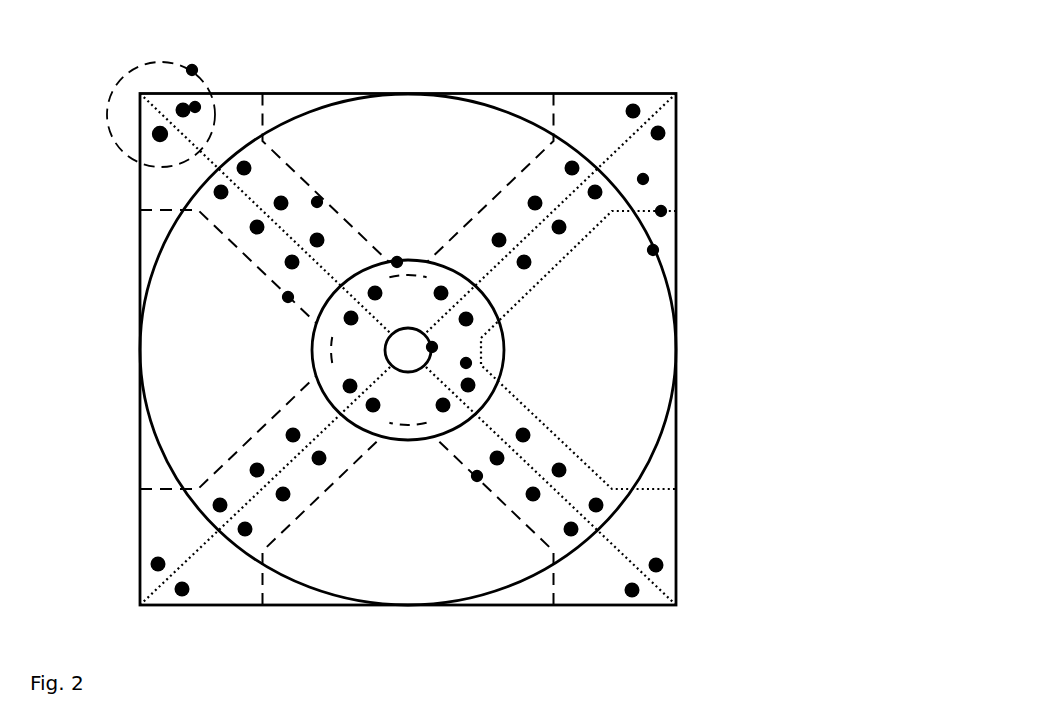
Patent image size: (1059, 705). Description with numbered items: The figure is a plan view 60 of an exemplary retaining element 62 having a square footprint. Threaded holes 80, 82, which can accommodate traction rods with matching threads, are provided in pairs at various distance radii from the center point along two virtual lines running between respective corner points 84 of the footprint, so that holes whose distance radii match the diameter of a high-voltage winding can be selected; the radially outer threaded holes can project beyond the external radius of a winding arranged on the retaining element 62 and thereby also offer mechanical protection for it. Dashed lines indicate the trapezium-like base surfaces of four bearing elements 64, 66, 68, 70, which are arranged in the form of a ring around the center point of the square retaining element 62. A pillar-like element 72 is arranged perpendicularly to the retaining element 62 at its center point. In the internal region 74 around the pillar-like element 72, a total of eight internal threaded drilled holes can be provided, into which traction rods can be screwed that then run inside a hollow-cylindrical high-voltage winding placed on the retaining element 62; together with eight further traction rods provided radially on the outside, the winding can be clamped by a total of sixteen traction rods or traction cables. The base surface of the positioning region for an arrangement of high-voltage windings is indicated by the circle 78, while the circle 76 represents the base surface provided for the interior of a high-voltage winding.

The plan view 60 is at (732, 650).
The retaining element 62 is at (643, 179).
The bearing element 64 is at (661, 211).
The bearing element 66 is at (477, 476).
The bearing element 68 is at (288, 297).
The bearing element 70 is at (317, 202).
The pillar-like element 72 is at (432, 347).
The internal region 74 is at (466, 363).
The circle representing base surface for winding interior 76 is at (397, 262).
The circle indicating positioning region base surface 78 is at (653, 250).
The threaded hole 80 is at (195, 107).
The threaded hole 82 is at (160, 134).
The corner point 84 is at (192, 70).